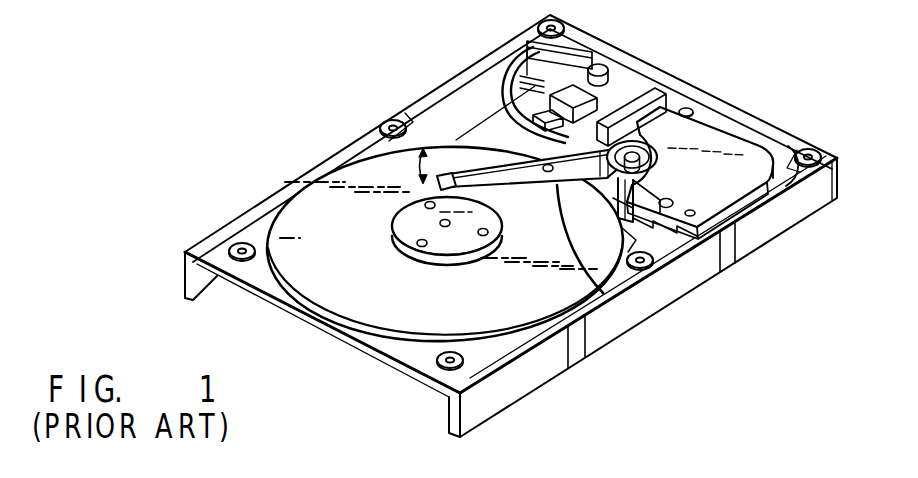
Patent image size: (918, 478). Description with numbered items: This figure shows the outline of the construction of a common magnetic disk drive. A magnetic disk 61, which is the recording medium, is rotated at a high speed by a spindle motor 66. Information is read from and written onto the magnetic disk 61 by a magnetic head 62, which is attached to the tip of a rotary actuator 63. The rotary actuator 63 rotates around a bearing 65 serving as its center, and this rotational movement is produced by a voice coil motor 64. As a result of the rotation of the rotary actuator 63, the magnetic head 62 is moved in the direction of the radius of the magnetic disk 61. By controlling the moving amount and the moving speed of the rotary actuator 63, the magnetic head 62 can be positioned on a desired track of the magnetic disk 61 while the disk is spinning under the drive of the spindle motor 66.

The magnetic disk 61 is at (410, 317).
The magnetic head 62 is at (437, 172).
The rotary actuator 63 is at (601, 291).
The voice coil motor 64 is at (748, 158).
The bearing 65 is at (633, 153).
The spindle motor 66 is at (407, 217).